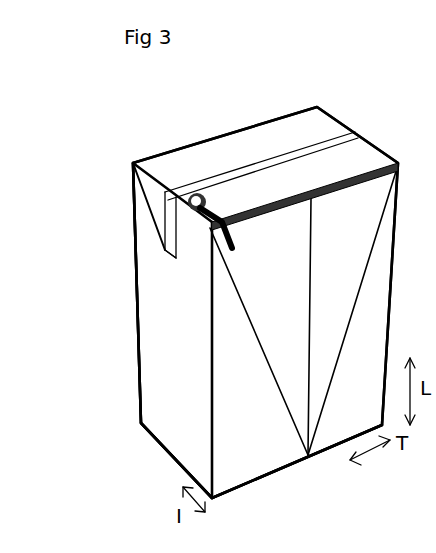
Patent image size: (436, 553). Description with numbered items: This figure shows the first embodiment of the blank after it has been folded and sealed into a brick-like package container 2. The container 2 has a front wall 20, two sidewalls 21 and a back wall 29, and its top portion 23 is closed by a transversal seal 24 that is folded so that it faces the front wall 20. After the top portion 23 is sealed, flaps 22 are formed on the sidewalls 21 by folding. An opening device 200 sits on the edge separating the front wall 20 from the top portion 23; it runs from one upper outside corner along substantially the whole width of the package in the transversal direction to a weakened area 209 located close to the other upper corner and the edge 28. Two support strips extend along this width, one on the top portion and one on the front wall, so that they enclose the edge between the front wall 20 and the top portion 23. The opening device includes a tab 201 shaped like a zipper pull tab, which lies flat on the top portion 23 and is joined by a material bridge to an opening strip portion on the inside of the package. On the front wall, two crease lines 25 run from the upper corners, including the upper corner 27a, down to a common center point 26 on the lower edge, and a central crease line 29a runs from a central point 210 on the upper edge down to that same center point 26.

The package container 2 is at (107, 357).
The front wall 20 is at (263, 477).
The sidewall 21 is at (173, 430).
The flaps 22 is at (158, 207).
The top portion 23 is at (180, 181).
The transversal seal 24 is at (360, 137).
The crease lines 25 is at (260, 350).
The common center point 26 is at (313, 457).
The upper corner 27a is at (253, 160).
The edge 28 is at (208, 338).
The back wall 29 is at (123, 273).
The central crease line 29a is at (318, 277).
The opening device 200 is at (400, 165).
The tab 201 is at (200, 240).
The weakened area 209 is at (235, 244).
The central point 210 is at (303, 205).